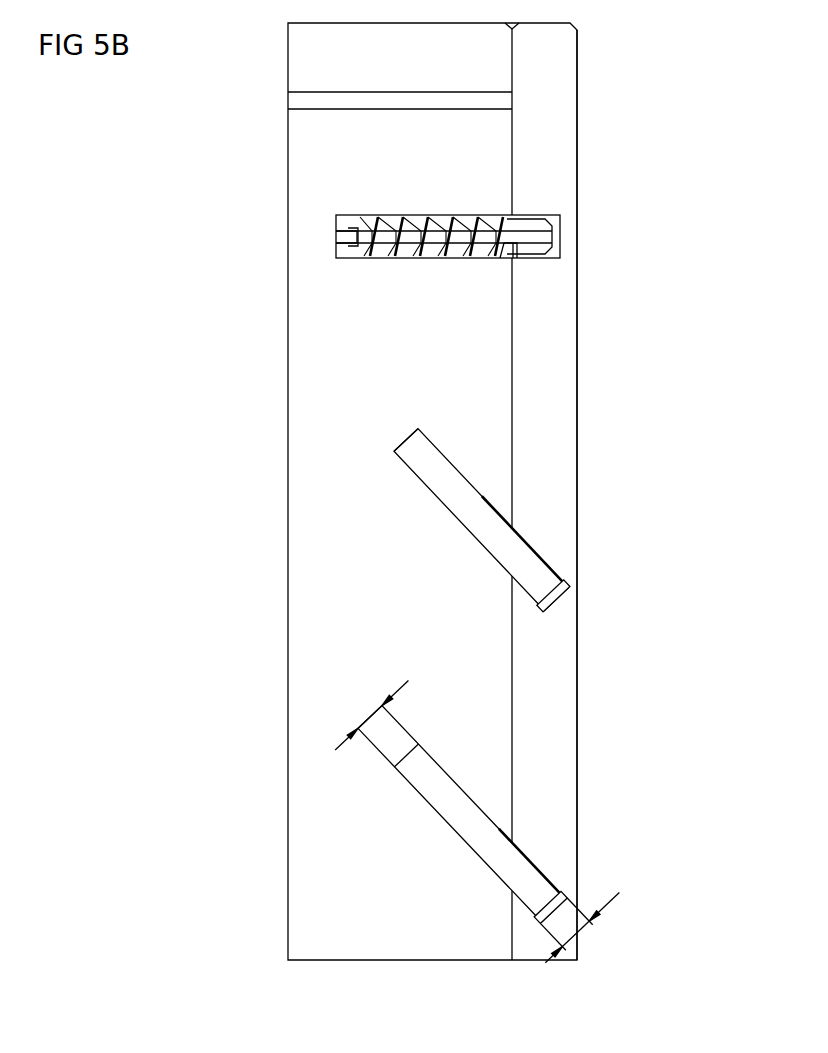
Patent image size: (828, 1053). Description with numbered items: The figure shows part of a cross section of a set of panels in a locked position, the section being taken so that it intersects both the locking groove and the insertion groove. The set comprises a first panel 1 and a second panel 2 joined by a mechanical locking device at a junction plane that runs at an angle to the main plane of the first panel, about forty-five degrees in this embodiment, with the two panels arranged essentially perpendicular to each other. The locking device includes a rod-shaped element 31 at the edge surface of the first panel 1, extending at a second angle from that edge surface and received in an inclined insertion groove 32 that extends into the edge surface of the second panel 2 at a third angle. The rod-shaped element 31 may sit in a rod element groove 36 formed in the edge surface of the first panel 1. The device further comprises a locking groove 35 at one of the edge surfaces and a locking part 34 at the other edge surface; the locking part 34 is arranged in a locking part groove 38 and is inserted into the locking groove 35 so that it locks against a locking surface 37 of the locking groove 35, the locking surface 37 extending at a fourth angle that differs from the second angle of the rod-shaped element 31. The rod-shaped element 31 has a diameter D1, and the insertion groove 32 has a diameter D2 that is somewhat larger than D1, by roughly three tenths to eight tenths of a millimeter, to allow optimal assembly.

The first panel 1 is at (289, 591).
The second panel 2 is at (577, 95).
The rod-shaped element 31 is at (472, 510).
The insertion groove 32 is at (562, 593).
The locking part 34 is at (370, 238).
The locking groove 35 is at (556, 237).
The rod element groove 36 is at (418, 430).
The locking surface 37 is at (551, 216).
The locking part groove 38 is at (392, 215).
The diameter of the rod-shaped element D1 is at (371, 715).
The diameter of the insertion groove D2 is at (595, 897).